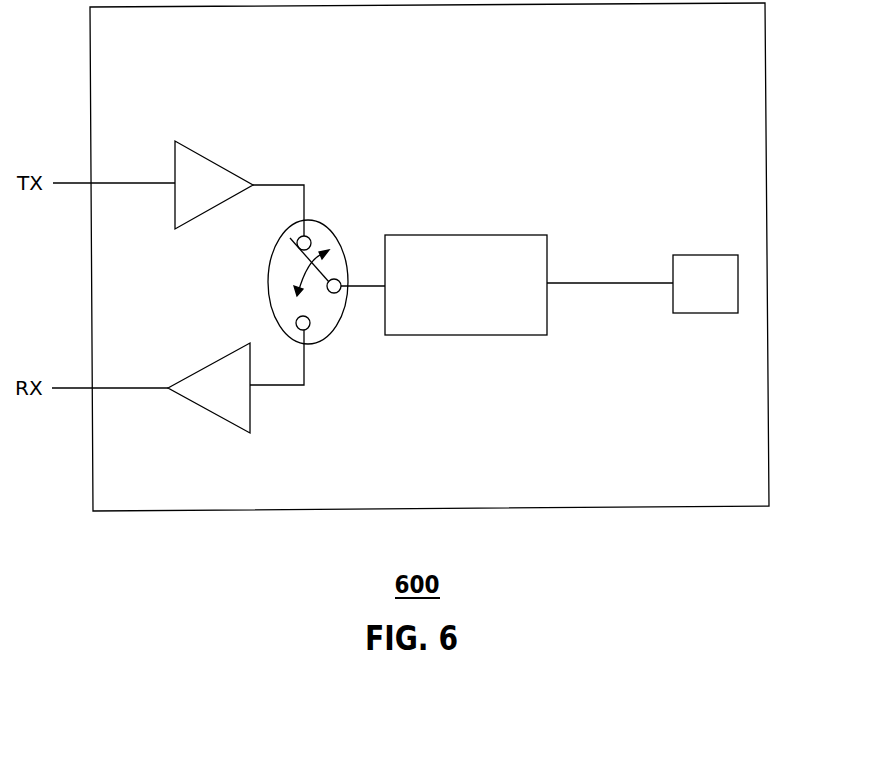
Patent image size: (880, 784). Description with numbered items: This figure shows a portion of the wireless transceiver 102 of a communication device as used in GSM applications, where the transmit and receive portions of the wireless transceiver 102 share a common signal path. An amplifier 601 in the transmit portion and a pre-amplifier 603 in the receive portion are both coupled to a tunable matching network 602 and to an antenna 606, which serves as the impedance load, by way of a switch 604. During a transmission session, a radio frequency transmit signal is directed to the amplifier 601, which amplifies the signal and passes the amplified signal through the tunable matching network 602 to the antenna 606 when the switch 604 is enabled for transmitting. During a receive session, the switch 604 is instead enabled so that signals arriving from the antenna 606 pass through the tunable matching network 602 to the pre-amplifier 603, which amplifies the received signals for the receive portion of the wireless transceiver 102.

The wireless transceiver 102 is at (709, 493).
The amplifier 601 is at (202, 153).
The tunable matching network 602 is at (507, 285).
The pre-amplifier 603 is at (218, 415).
The switch 604 is at (332, 232).
The antenna 606 is at (703, 253).